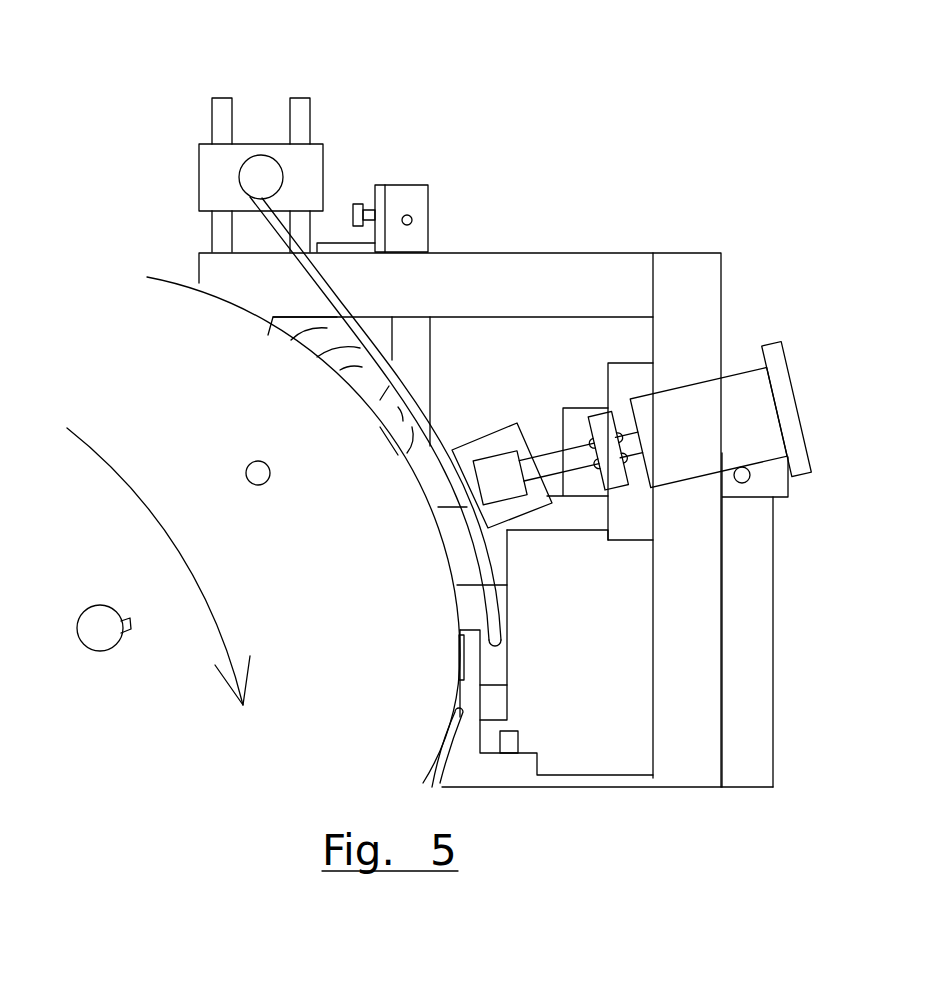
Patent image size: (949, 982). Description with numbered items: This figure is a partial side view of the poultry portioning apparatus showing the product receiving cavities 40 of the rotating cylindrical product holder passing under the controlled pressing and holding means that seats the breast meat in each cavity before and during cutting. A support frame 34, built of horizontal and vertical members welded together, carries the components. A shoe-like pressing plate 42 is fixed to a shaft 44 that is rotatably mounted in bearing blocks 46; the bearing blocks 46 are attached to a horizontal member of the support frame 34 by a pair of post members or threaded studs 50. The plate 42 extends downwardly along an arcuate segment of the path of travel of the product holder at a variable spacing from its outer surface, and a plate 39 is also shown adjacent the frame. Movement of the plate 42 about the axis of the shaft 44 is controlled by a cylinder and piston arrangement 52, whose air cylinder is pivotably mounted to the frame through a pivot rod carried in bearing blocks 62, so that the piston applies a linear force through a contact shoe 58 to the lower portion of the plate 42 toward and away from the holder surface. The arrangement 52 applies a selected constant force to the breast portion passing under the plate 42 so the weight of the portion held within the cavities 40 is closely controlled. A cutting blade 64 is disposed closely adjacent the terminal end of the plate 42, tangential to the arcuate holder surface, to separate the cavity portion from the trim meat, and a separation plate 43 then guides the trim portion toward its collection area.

The support frame 34 is at (608, 233).
The guide plate 39 is at (430, 343).
The product receiving cavity 40 is at (357, 432).
The pressing plate 42 is at (443, 431).
The separation plate 43 is at (445, 740).
The shaft 44 is at (239, 177).
The bearing block 46 is at (323, 167).
The post member 50 is at (212, 98).
The cylinder and piston arrangement 52 is at (837, 408).
The contact shoe 58 is at (525, 517).
The bearing block 62 is at (608, 388).
The cutting blade 64 is at (463, 660).